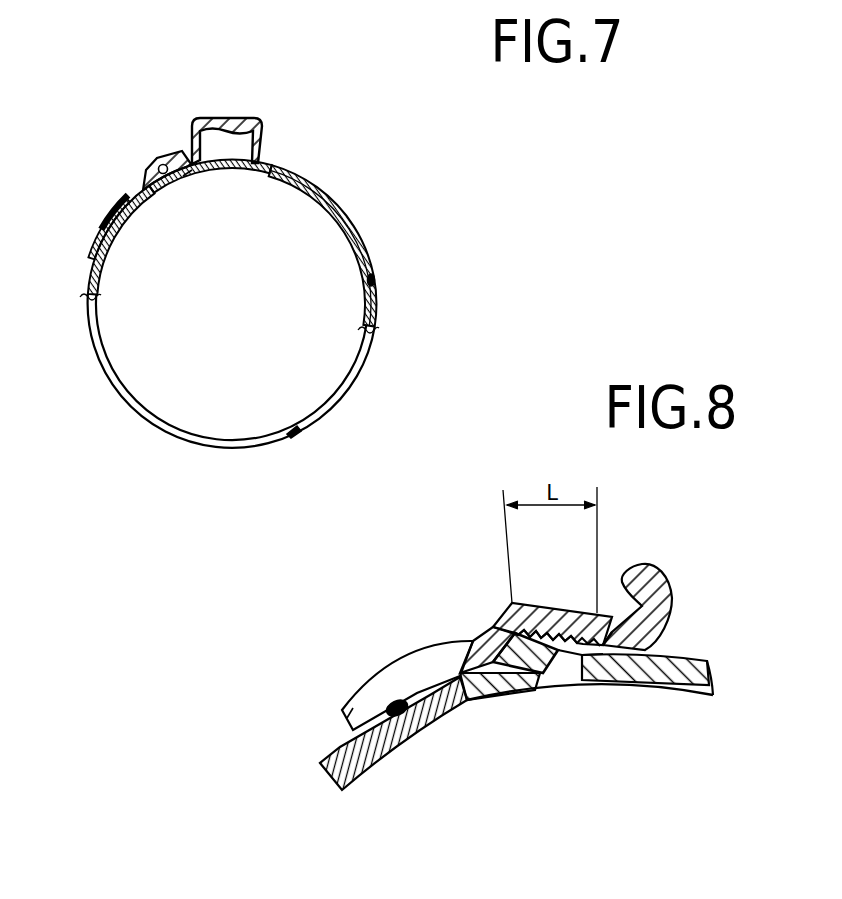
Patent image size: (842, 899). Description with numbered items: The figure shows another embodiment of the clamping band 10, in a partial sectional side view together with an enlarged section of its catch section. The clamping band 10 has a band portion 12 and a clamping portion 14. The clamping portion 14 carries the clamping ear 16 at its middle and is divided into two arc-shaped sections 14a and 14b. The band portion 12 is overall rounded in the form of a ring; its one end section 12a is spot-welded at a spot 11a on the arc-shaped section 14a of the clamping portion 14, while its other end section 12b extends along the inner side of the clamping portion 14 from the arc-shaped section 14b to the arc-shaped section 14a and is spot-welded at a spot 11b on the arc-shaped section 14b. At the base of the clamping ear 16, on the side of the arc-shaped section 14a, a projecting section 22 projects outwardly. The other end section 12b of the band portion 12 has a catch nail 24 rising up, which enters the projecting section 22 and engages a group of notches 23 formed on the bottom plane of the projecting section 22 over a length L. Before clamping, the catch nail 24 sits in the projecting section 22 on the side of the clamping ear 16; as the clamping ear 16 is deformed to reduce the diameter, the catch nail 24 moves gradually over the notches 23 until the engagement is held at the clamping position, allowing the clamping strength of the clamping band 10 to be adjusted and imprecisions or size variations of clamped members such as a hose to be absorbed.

In FIG. 7, the clamping band 10 is at (369, 126).
In FIG. 7, the spot 11a is at (102, 228).
In FIG. 8, the spot 11a is at (418, 728).
In FIG. 7, the spot 11b is at (373, 273).
In FIG. 7, the band portion 12 is at (117, 392).
In FIG. 7, the end section 12a is at (94, 260).
In FIG. 8, the end section 12a is at (339, 748).
In FIG. 7, the end section 12b is at (235, 168).
In FIG. 8, the end section 12b is at (692, 660).
In FIG. 7, the clamping portion 14 is at (374, 275).
In FIG. 7, the arc-shaped section 14a is at (116, 206).
In FIG. 8, the arc-shaped section 14a is at (428, 660).
In FIG. 7, the arc-shaped section 14b is at (376, 303).
In FIG. 7, the clamping ear 16 is at (256, 118).
In FIG. 8, the clamping ear 16 is at (668, 578).
In FIG. 7, the projecting section 22 is at (147, 158).
In FIG. 8, the projecting section 22 is at (497, 623).
In FIG. 7, the group of notches 23 is at (163, 153).
In FIG. 8, the group of notches 23 is at (612, 617).
In FIG. 7, the catch nail 24 is at (186, 175).
In FIG. 8, the catch nail 24 is at (555, 683).